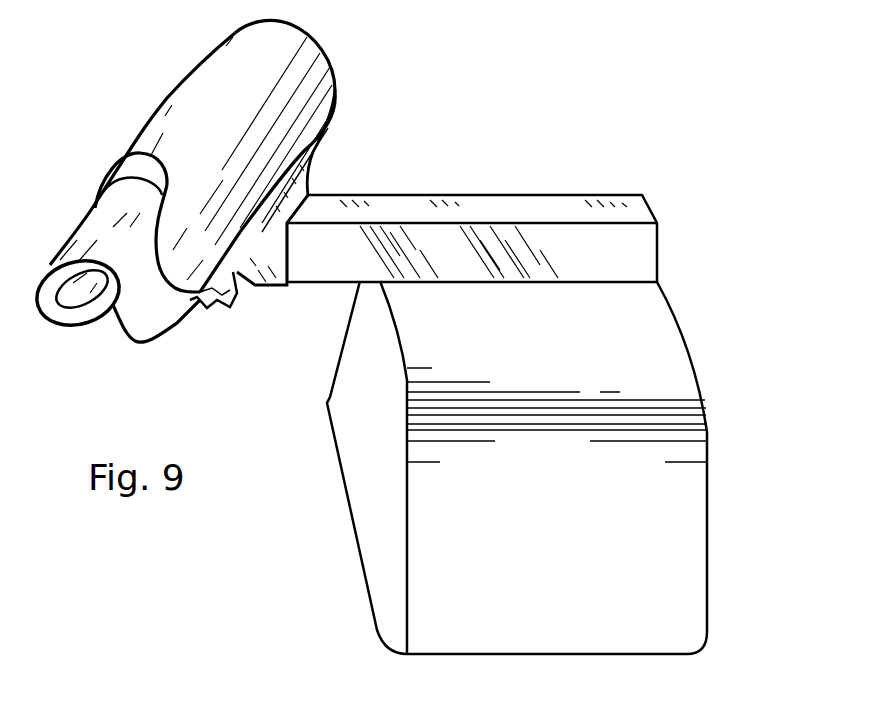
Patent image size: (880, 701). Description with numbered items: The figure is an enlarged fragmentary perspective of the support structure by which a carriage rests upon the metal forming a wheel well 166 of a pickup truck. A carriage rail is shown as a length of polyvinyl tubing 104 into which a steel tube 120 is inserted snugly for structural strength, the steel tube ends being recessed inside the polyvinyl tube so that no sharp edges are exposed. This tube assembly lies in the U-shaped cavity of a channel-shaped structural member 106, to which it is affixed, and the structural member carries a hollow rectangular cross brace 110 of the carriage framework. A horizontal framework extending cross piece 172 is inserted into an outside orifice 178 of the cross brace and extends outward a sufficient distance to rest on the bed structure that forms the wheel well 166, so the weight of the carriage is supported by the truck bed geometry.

The polyvinyl tubing 104 is at (150, 113).
The channel-shaped structural member 106 is at (313, 162).
The cross brace 110 is at (262, 297).
The steel tube 120 is at (145, 330).
The wheel well 166 is at (692, 435).
The horizontal framework extending cross piece 172 is at (497, 207).
The outside orifice 178 is at (310, 194).